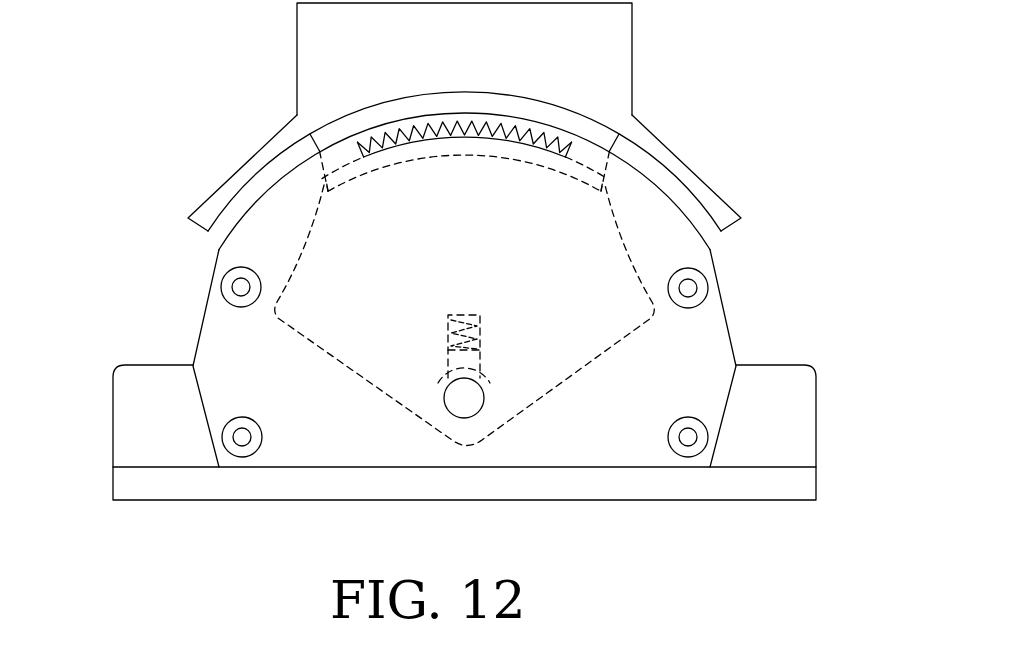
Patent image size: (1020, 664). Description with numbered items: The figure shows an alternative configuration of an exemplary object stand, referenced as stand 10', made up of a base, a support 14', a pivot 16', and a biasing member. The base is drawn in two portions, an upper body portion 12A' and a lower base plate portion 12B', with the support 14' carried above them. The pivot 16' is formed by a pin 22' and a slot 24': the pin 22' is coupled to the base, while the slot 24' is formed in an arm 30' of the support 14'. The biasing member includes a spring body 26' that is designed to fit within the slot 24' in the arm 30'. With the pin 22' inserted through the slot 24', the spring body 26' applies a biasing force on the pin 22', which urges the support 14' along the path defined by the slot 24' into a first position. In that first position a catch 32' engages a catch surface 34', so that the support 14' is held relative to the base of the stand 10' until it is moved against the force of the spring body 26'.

The stand 10' is at (77, 93).
The support 14' is at (464, 117).
The body housing 12A' is at (511, 290).
The base plate 12B' is at (513, 432).
The catch surface 34' is at (464, 123).
The catch 32' is at (464, 163).
The arm 30' is at (458, 300).
The pin 22' is at (508, 413).
The pivot 16' is at (427, 363).
The slot 24' is at (497, 345).
The spring body 26' is at (425, 322).